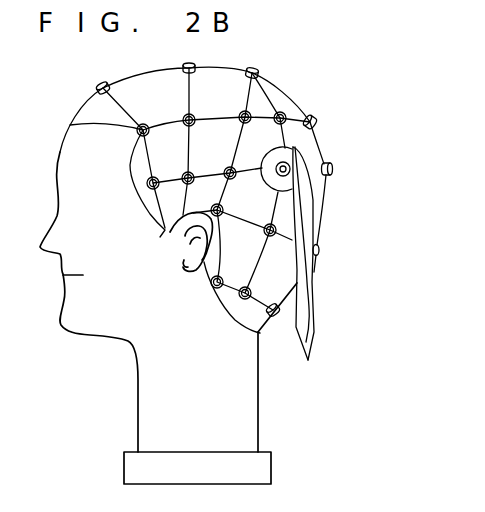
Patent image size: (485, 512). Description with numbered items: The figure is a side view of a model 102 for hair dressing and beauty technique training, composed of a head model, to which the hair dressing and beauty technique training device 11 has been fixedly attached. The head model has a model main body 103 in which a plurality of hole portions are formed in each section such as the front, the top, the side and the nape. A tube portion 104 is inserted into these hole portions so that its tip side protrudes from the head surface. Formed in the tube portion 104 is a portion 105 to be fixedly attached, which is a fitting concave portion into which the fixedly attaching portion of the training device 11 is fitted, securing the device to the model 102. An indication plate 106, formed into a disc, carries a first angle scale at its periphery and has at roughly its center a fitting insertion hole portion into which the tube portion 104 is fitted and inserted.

The hair dressing and beauty technique training device 11 is at (340, 320).
The model for hair dressing and beauty technique training 102 is at (239, 194).
The model main body 103 is at (320, 222).
The tube portion 104 is at (290, 104).
The portion to be fixedly attached 105 is at (289, 121).
The indication plate 106 is at (322, 160).